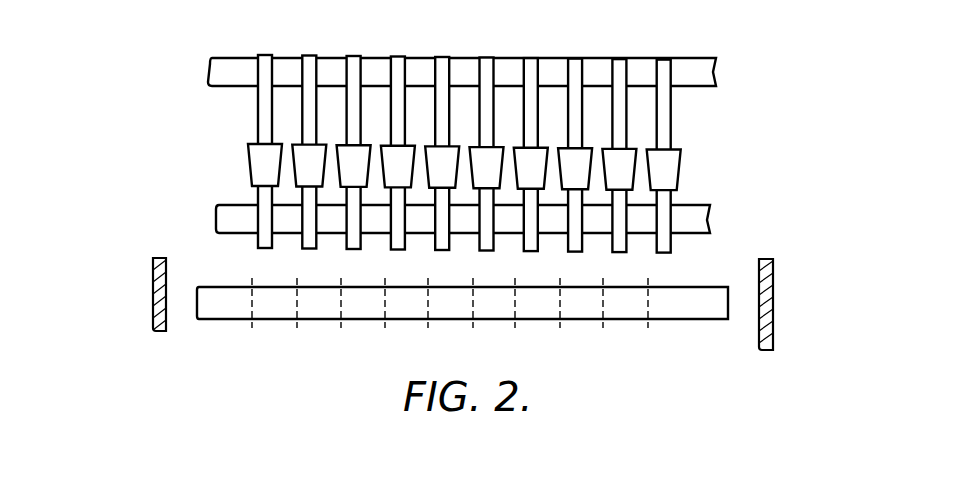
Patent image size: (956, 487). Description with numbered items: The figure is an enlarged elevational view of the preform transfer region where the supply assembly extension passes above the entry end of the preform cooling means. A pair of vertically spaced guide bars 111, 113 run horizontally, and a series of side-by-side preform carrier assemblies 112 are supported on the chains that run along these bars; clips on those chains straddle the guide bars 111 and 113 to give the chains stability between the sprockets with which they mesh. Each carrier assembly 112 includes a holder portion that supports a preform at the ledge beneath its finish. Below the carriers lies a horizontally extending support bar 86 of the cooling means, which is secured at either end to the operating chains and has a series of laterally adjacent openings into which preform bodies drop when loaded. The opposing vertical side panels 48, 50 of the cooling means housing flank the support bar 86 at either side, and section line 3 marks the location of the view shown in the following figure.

The guide bar 111 is at (463, 68).
The preform carrier assembly 112 is at (693, 152).
The guide bar 113 is at (463, 222).
The support bar 86 is at (580, 308).
The vertical side panel 48 is at (152, 285).
The vertical side panel 50 is at (773, 273).
The section line for FIG. 3 is at (290, 49).